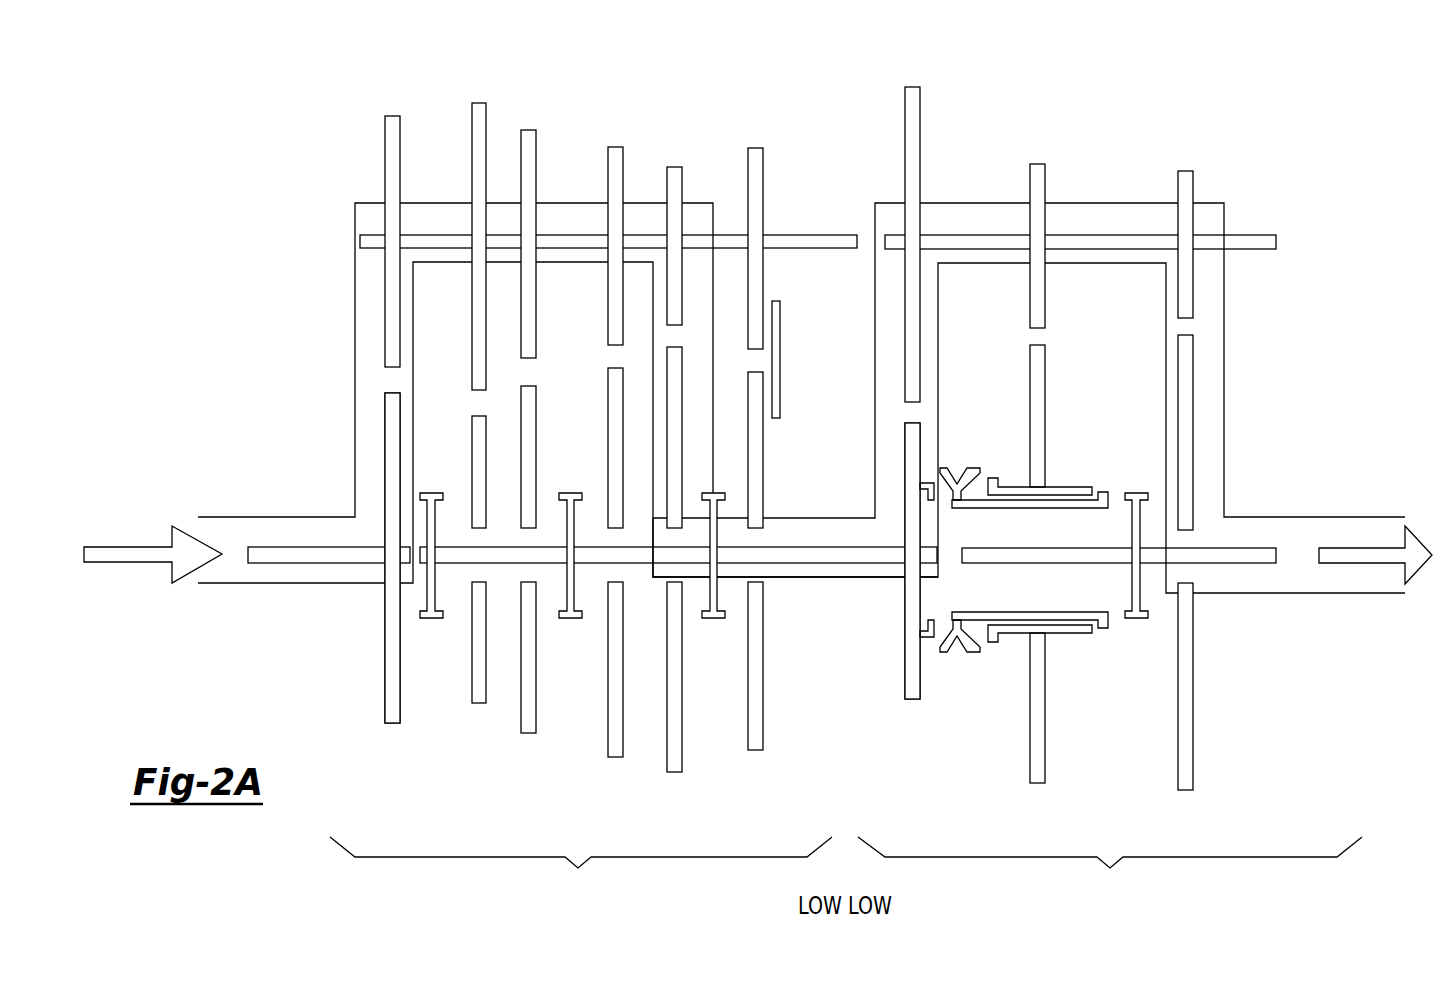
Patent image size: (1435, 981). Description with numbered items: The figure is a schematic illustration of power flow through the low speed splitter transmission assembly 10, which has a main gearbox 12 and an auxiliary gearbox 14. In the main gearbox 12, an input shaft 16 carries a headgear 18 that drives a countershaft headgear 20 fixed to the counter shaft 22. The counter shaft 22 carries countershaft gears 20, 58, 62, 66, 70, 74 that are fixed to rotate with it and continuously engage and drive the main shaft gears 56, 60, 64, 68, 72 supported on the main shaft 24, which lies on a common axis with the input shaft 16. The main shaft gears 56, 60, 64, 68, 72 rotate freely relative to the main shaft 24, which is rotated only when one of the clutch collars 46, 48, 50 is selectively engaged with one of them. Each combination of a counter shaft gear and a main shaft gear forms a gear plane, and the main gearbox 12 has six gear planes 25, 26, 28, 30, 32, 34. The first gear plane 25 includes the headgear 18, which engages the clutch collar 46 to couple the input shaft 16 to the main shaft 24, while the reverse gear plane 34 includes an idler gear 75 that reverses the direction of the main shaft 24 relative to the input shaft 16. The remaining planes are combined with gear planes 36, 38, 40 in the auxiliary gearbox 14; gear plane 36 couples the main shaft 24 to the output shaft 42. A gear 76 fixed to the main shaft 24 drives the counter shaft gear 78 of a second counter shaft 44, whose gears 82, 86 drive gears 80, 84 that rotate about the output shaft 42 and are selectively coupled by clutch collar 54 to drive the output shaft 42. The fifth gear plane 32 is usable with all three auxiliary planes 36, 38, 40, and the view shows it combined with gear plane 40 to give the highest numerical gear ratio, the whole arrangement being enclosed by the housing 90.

The low speed splitter transmission assembly 10 is at (1208, 103).
The main gearbox 12 is at (581, 870).
The auxiliary gearbox 14 is at (1110, 870).
The input shaft 16 is at (265, 563).
The headgear 18 is at (383, 668).
The countershaft headgear 20 is at (385, 330).
The counter shaft 22 is at (372, 233).
The main shaft 24 is at (427, 545).
The first gear plane 25 is at (392, 730).
The gear plane 26 is at (478, 710).
The gear plane 28 is at (528, 739).
The gear plane 30 is at (613, 763).
The fifth gear plane 32 is at (673, 778).
The reverse gear plane 34 is at (754, 756).
The gear plane 36 is at (912, 706).
The gear plane 38 is at (1036, 790).
The gear plane 40 is at (1185, 797).
The output shaft 42 is at (1233, 565).
The second counter shaft 44 is at (1253, 236).
The clutch collar 46 is at (431, 620).
The clutch collar 48 is at (570, 620).
The clutch collar 50 is at (713, 620).
The clutch collar 54 is at (966, 600).
The main shaft gear 56 is at (472, 450).
The countershaft gear 58 is at (470, 357).
The main shaft gear 60 is at (536, 430).
The countershaft gear 62 is at (536, 318).
The main shaft gear 64 is at (606, 445).
The countershaft gear 66 is at (607, 333).
The main shaft gear 68 is at (664, 520).
The countershaft gear 70 is at (683, 270).
The main shaft gear 72 is at (763, 486).
The countershaft gear 74 is at (764, 164).
The idler gear 75 is at (781, 367).
The gear 76 is at (921, 455).
The counter shaft gear 78 is at (921, 112).
The gear 80 is at (1046, 372).
The gear 82 is at (1046, 188).
The gear 84 is at (1194, 412).
The gear 86 is at (1194, 188).
The housing 90 is at (346, 433).